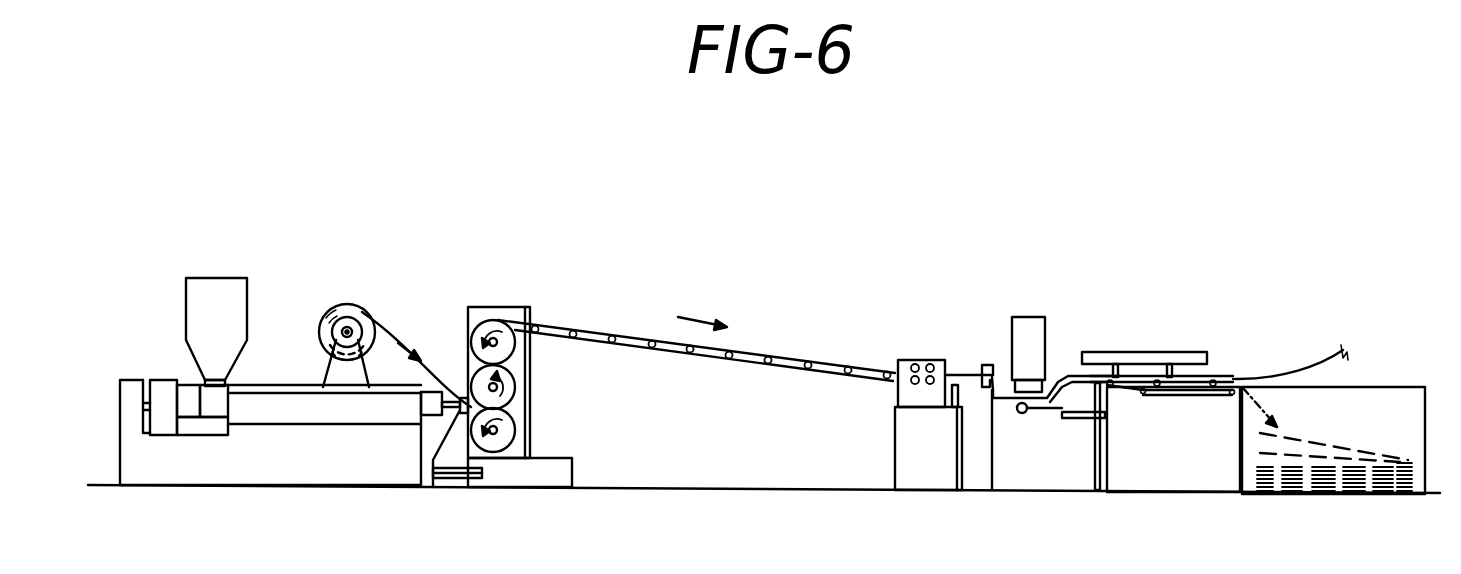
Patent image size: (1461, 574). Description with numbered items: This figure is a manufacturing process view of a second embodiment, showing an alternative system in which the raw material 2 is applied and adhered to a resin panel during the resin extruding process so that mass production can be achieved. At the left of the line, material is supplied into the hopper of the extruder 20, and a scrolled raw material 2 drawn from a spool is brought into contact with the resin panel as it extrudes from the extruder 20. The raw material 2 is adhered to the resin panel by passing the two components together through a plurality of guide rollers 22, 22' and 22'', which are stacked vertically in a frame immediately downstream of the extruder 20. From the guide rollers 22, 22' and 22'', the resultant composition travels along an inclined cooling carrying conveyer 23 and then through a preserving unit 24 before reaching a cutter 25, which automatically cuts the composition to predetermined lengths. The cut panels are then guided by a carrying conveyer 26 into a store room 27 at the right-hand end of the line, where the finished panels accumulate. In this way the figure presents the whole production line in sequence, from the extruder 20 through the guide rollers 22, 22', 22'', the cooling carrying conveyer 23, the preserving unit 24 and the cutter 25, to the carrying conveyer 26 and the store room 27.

The raw material 2 is at (378, 342).
The extruder 20 is at (285, 487).
The guide roller 22 is at (540, 378).
The guide roller 22' is at (466, 338).
The guide roller 22'' is at (549, 430).
The cooling carrying conveyer 23 is at (748, 366).
The preserving unit 24 is at (922, 358).
The cutter 25 is at (1027, 317).
The carrying conveyer 26 is at (1158, 352).
The store room 27 is at (1365, 427).